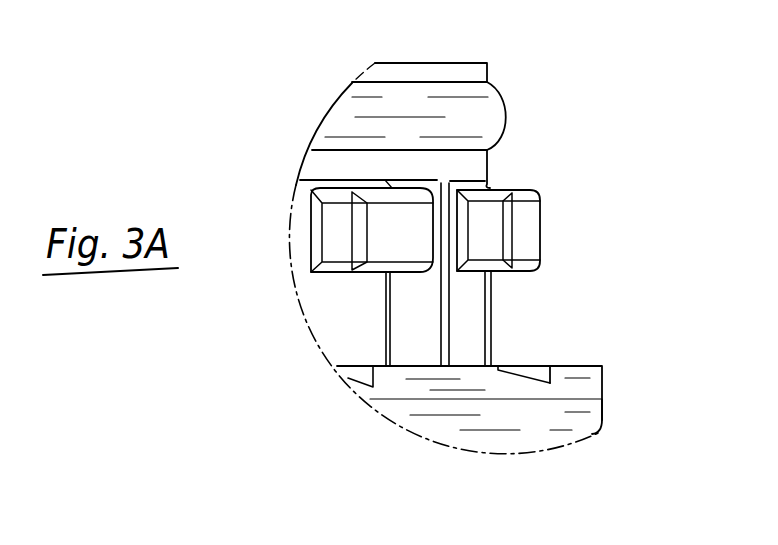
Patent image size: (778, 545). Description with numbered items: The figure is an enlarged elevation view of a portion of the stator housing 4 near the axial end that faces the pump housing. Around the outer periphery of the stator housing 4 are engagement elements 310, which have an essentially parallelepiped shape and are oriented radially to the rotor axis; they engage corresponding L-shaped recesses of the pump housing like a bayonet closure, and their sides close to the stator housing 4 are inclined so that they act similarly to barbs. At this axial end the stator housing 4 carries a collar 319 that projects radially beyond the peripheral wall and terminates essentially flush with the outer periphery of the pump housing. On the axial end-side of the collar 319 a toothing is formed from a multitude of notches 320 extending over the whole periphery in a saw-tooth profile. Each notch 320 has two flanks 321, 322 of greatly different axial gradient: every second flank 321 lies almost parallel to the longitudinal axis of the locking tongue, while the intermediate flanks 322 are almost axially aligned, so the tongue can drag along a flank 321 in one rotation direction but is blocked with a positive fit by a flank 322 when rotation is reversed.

The stator housing 4 is at (417, 345).
The engagement element 310 is at (547, 225).
The collar 319 is at (440, 418).
The notch 320 is at (551, 383).
The flank 321 is at (498, 373).
The flank 322 is at (565, 372).